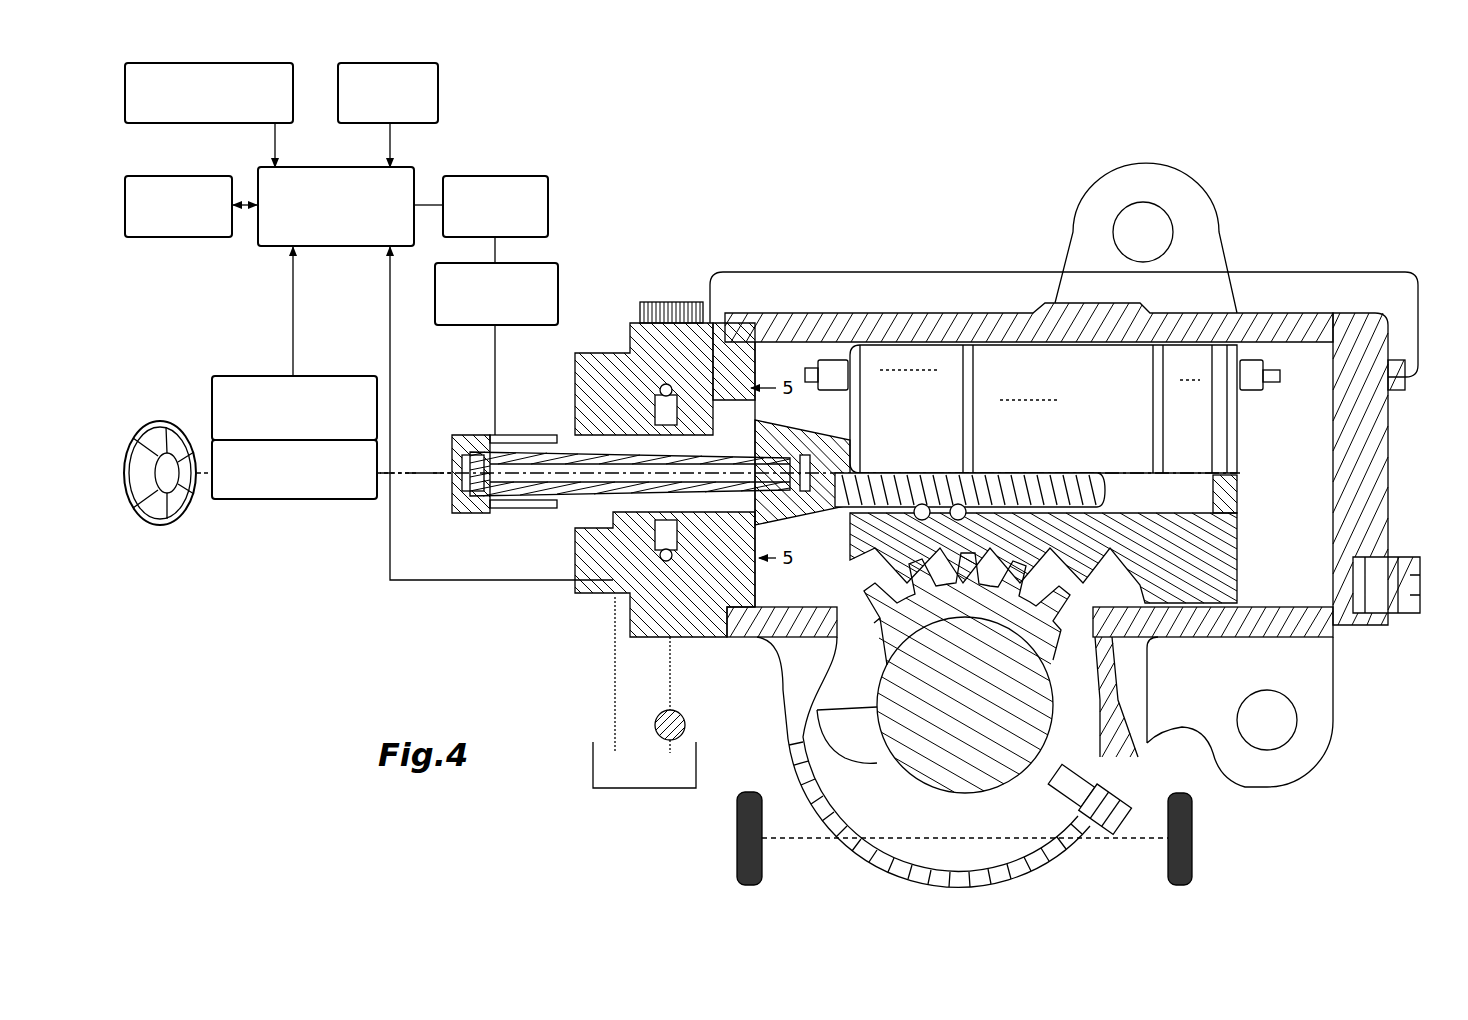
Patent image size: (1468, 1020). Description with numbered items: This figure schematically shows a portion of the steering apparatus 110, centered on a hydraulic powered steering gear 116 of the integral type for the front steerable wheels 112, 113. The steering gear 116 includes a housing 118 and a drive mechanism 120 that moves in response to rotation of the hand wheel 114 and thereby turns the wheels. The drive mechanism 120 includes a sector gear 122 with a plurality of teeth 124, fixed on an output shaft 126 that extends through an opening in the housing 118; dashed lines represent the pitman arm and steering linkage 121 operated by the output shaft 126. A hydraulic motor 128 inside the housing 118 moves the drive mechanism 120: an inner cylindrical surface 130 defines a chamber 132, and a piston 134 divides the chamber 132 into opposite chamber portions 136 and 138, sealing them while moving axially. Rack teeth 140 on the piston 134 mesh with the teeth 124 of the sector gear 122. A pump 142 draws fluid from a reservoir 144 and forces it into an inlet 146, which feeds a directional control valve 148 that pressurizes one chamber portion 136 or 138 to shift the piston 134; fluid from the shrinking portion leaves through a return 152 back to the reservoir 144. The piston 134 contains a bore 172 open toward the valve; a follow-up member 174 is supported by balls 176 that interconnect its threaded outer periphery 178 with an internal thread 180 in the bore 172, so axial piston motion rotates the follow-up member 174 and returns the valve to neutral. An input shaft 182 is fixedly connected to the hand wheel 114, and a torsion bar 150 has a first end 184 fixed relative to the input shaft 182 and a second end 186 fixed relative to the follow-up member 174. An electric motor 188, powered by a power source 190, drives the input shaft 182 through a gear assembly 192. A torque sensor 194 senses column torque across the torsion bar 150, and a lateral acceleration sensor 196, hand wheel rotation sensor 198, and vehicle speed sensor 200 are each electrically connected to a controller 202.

The apparatus 110 is at (722, 216).
The front steerable wheel 112 is at (735, 853).
The front steerable wheel 113 is at (1193, 860).
The hand wheel 114 is at (160, 525).
The steering gear 116 is at (819, 258).
The housing 118 is at (1363, 472).
The drive mechanism 120 is at (864, 706).
The pitman arm and steering linkage 121 is at (810, 838).
The sector gear 122 is at (1068, 665).
The teeth 124 is at (906, 605).
The output shaft 126 is at (965, 705).
The hydraulic motor 128 is at (898, 371).
The inner cylindrical surface 130 is at (1310, 633).
The chamber 132 is at (1304, 388).
The piston 134 is at (1213, 563).
The chamber portion 136 is at (783, 360).
The chamber portion 138 is at (1292, 430).
The rack teeth 140 is at (843, 560).
The pump 142 is at (687, 725).
The reservoir 144 is at (696, 750).
The inlet 146 is at (698, 637).
The directional control valve 148 is at (756, 430).
The torsion bar 150 is at (572, 472).
The return 152 is at (612, 584).
The bore 172 is at (1205, 508).
The follow-up member 174 is at (1097, 497).
The balls 176 is at (913, 510).
The outer periphery 178 is at (947, 483).
The internal thread 180 is at (988, 512).
The input shaft 182 is at (482, 520).
The first end 184 is at (508, 470).
The second end 186 is at (807, 486).
The electric motor 188 is at (528, 174).
The power source 190 is at (160, 238).
The gear assembly 192 is at (556, 278).
The torque sensor 194 is at (670, 555).
The lateral acceleration sensor 196 is at (220, 125).
The hand wheel rotation sensor 198 is at (210, 440).
The vehicle speed sensor 200 is at (430, 97).
The controller 202 is at (273, 233).